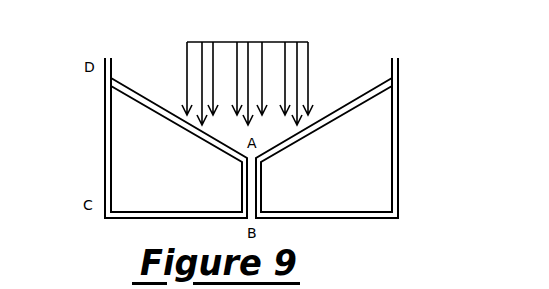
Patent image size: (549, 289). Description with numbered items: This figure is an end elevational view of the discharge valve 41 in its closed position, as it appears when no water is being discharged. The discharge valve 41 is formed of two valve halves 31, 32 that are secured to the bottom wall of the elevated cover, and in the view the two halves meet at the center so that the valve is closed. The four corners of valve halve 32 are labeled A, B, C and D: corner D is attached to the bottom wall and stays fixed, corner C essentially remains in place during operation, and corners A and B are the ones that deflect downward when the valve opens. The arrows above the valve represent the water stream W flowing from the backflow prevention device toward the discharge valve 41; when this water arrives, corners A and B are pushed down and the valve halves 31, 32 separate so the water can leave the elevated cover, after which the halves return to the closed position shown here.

The discharge valve 41 is at (162, 78).
The valve halve 32 is at (104, 167).
The valve halve 31 is at (399, 172).
The water stream W is at (310, 52).